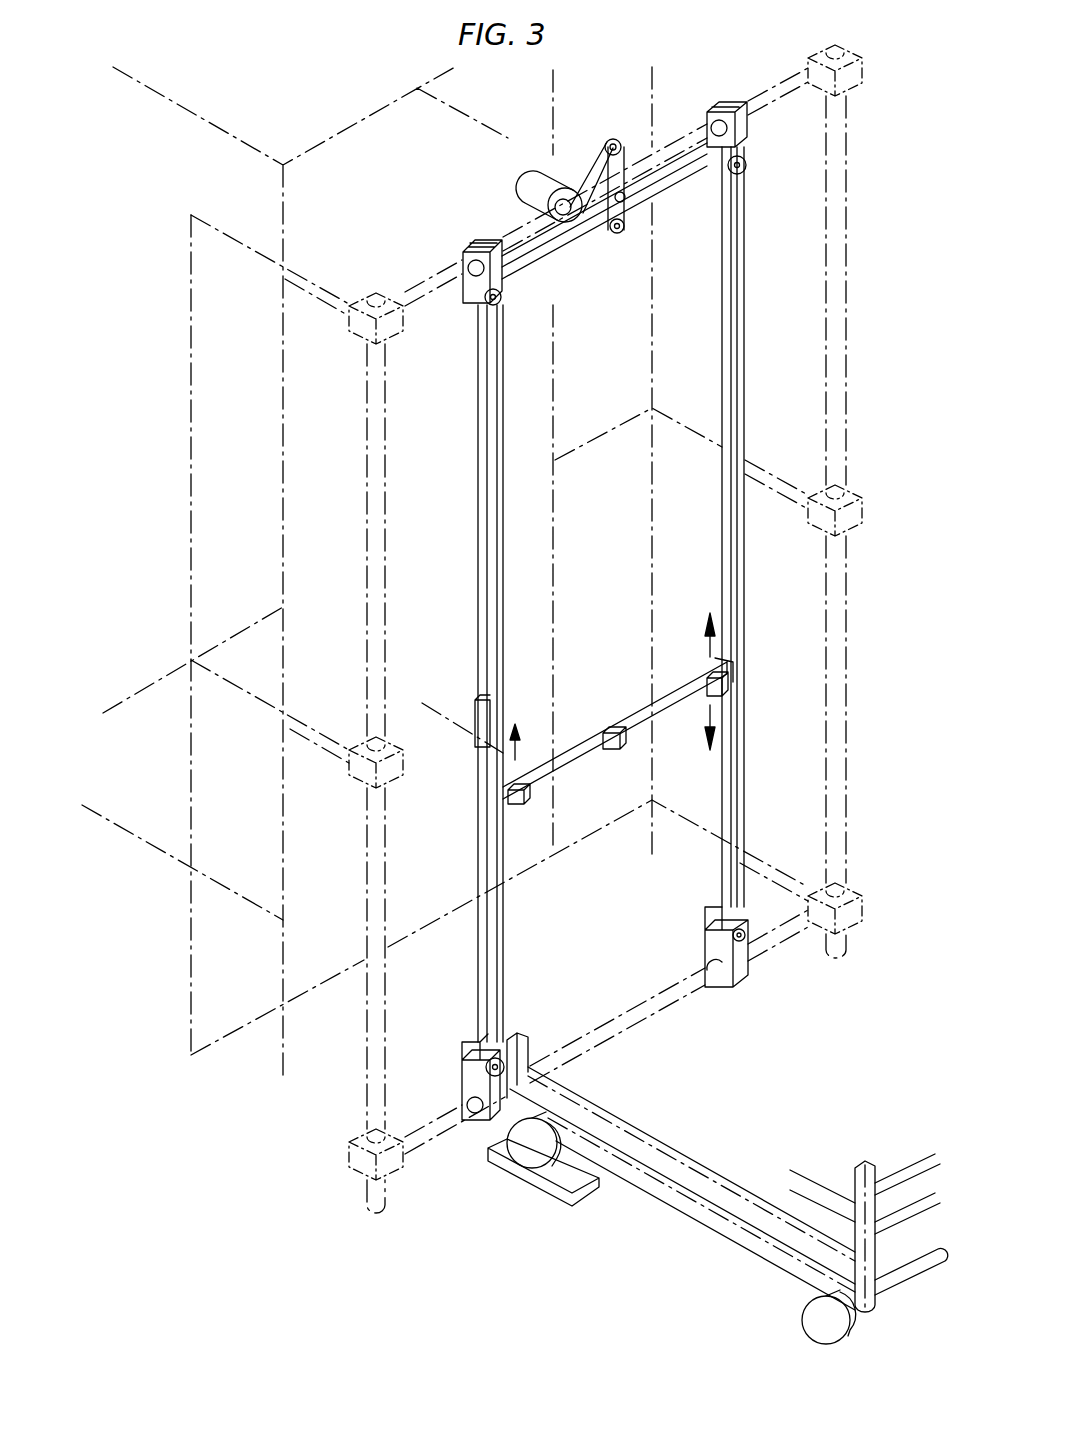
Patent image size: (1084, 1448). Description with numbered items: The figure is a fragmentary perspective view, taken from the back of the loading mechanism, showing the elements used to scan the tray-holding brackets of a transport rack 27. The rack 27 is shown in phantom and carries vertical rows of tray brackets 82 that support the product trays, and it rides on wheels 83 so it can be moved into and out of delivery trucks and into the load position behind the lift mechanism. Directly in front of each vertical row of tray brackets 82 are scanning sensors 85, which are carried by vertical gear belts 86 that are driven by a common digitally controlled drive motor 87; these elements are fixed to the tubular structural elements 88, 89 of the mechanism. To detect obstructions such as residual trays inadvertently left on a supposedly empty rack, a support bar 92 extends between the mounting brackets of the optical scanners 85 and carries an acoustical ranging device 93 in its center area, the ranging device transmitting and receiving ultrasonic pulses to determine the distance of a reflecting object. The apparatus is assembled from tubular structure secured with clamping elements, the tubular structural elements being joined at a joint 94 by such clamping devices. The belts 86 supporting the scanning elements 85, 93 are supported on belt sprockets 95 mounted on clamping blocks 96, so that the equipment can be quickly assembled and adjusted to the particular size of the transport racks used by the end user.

The transport rack 27 is at (718, 1218).
The tray brackets 82 is at (618, 1117).
The wheels 83 is at (527, 1140).
The scanning sensors 85 is at (515, 800).
The vertical gear belts 86 is at (503, 632).
The drive motor 87 is at (525, 185).
The tubular structural element 88 is at (667, 983).
The tubular structural element 89 is at (437, 272).
The support bar 92 is at (657, 700).
The acoustical ranging device 93 is at (612, 752).
The joint 94 is at (405, 335).
The belt sprockets 95 is at (503, 297).
The clamping blocks 96 is at (748, 140).